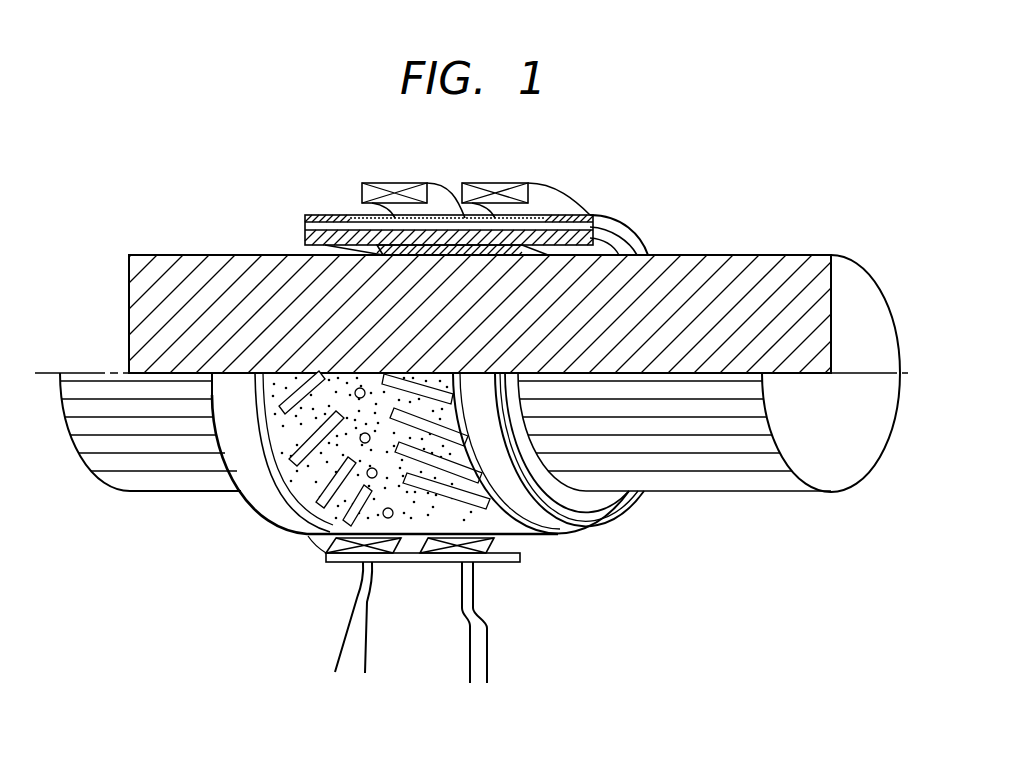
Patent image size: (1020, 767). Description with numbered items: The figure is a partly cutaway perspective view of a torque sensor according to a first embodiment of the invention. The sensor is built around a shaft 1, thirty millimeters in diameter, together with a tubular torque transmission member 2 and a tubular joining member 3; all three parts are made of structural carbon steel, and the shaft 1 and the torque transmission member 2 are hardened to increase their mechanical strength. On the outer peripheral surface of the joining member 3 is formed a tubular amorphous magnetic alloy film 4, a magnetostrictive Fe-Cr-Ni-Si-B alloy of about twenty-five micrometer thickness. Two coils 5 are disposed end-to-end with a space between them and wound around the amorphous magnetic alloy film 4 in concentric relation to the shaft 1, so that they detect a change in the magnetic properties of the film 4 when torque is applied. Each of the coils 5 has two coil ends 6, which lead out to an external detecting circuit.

The shaft 1 is at (763, 270).
The tubular torque transmission member 2 is at (352, 219).
The tubular joining member 3 is at (585, 217).
The amorphous magnetic alloy film 4 is at (454, 488).
The coils 5 is at (483, 182).
The coil ends 6 is at (343, 650).